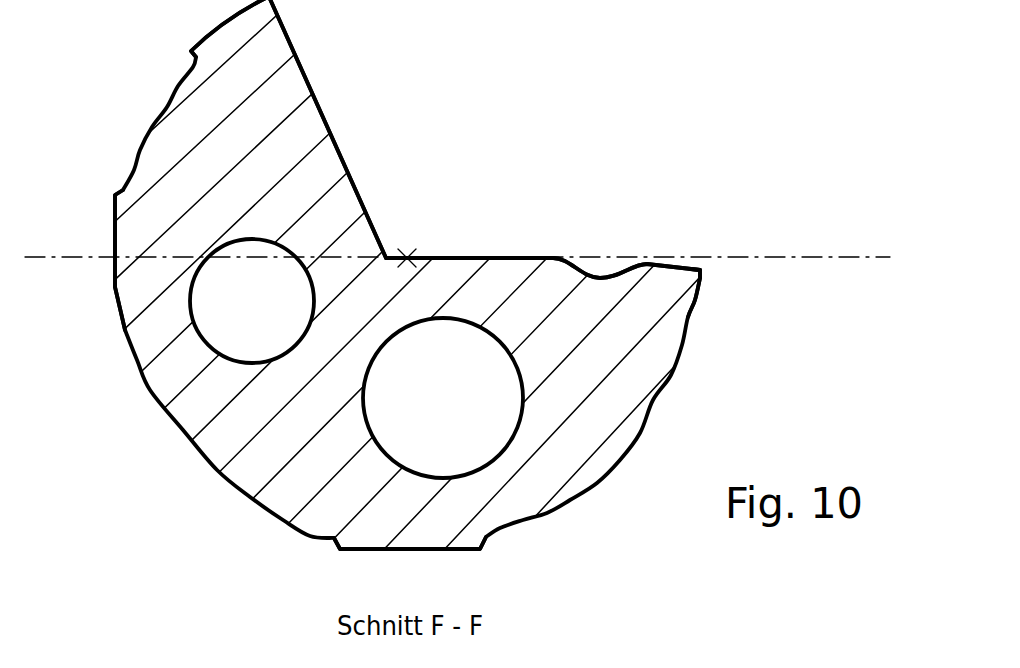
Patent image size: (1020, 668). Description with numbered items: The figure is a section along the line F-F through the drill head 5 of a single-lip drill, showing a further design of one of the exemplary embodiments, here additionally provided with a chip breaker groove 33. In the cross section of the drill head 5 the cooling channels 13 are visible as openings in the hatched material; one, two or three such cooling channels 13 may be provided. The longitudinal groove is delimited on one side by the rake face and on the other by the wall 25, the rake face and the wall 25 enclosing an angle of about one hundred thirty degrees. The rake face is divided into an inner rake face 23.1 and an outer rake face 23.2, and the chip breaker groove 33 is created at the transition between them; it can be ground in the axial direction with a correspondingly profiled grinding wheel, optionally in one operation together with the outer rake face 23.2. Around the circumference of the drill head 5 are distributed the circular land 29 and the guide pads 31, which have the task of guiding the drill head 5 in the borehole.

The drill head 5 is at (283, 490).
The cooling channel 13 is at (410, 465).
The wall 25 is at (322, 113).
The inner rake face 23.1 is at (490, 258).
The outer rake face 23.2 is at (682, 268).
The chip breaker groove 33 is at (606, 272).
The circular land 29 is at (700, 283).
The guide pad 31 is at (117, 198).